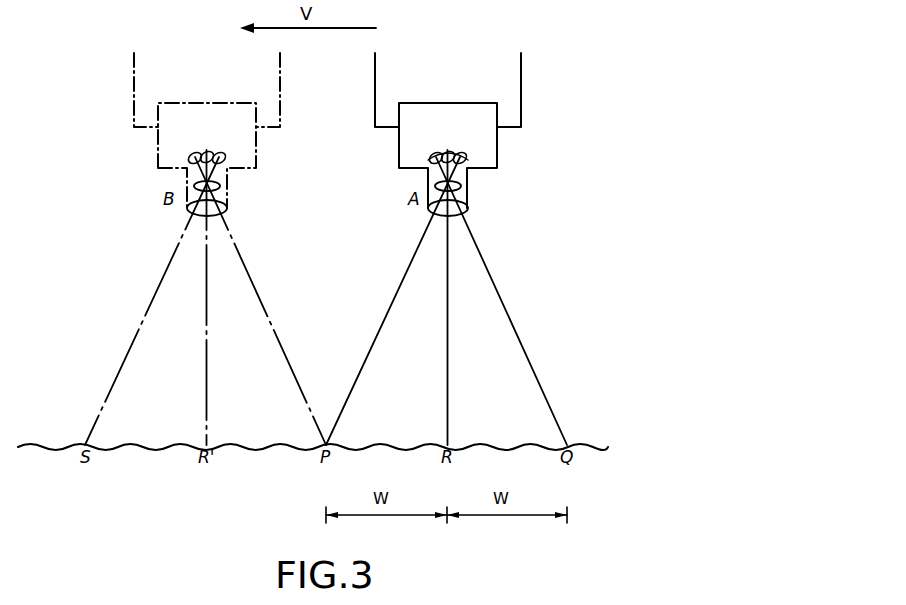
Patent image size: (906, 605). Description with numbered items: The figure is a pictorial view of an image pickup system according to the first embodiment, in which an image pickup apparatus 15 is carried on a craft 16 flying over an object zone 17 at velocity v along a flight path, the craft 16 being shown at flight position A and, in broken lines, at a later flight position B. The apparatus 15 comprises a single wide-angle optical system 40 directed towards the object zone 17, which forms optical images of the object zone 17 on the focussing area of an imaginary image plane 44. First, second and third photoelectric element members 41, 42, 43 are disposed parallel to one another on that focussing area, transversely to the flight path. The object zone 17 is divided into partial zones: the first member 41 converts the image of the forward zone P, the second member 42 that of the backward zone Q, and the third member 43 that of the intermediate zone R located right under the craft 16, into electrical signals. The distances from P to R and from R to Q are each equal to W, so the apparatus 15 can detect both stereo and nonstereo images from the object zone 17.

The image pickup apparatus 15 is at (497, 144).
The craft 16 is at (521, 82).
The object zone 17 is at (470, 450).
The wide-angle optical system 40 is at (467, 186).
The first photoelectric element member 41 is at (461, 152).
The second photoelectric element member 42 is at (437, 152).
The third photoelectric element member 43 is at (448, 152).
The imaginary image plane 44 is at (425, 158).